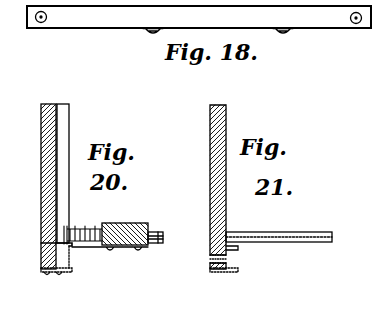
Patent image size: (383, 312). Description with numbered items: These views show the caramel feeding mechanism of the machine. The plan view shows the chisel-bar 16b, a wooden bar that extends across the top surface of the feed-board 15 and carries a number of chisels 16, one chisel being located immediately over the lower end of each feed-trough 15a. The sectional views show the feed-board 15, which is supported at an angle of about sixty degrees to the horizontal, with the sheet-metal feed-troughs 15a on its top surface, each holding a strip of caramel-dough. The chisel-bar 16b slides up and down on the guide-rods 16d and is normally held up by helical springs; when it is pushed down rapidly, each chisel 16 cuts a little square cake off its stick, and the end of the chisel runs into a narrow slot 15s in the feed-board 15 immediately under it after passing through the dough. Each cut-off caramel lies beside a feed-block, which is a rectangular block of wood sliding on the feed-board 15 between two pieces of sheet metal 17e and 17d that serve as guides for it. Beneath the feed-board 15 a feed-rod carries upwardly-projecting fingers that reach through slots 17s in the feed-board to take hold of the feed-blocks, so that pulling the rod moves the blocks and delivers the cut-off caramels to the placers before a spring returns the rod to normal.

In FIG. 20, the feed-board 15 is at (47, 104).
In FIG. 21, the feed-board 15 is at (221, 107).
In FIG. 20, the feed-trough 15a is at (63, 121).
In FIG. 20, the slot 15s is at (43, 243).
In FIG. 18, the chisel 16 is at (146, 32).
In FIG. 20, the chisel 16 is at (88, 248).
In FIG. 18, the chisel-bar 16b is at (199, 17).
In FIG. 20, the chisel-bar 16b is at (118, 232).
In FIG. 20, the guide-rod 16d is at (159, 234).
In FIG. 21, the guide-rod 16d is at (273, 235).
In FIG. 21, the guide piece 17d is at (238, 249).
In FIG. 20, the guide piece 17e is at (59, 273).
In FIG. 21, the guide piece 17e is at (232, 273).
In FIG. 21, the slot 17s is at (211, 259).